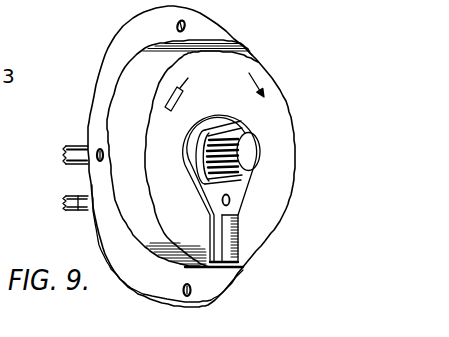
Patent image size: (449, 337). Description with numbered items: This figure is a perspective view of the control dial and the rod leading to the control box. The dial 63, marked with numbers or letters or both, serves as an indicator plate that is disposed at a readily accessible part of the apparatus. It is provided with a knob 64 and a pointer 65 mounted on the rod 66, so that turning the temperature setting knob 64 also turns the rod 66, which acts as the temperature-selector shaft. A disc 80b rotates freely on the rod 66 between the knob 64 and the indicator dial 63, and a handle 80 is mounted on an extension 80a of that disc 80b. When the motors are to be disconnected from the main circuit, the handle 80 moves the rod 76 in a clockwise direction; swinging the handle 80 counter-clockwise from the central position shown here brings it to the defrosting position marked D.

The dial 63 is at (278, 202).
The knob 64 is at (250, 147).
The pointer 65 is at (213, 133).
The rod 66 is at (75, 145).
The rod 76 is at (74, 211).
The handle 80 is at (243, 257).
The extension 80a is at (188, 268).
The disc 80b is at (231, 200).